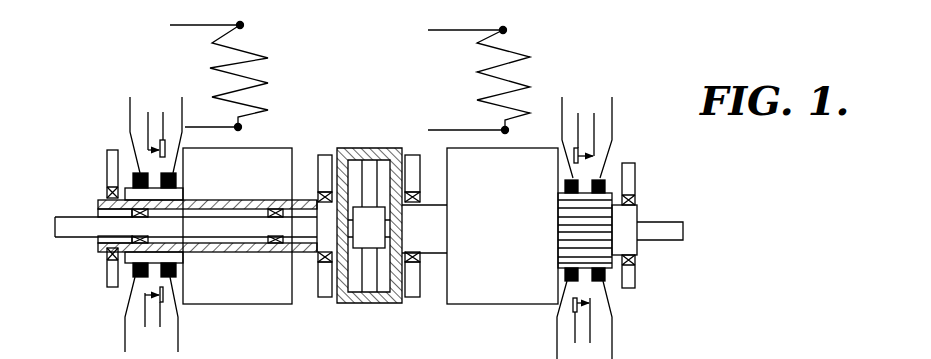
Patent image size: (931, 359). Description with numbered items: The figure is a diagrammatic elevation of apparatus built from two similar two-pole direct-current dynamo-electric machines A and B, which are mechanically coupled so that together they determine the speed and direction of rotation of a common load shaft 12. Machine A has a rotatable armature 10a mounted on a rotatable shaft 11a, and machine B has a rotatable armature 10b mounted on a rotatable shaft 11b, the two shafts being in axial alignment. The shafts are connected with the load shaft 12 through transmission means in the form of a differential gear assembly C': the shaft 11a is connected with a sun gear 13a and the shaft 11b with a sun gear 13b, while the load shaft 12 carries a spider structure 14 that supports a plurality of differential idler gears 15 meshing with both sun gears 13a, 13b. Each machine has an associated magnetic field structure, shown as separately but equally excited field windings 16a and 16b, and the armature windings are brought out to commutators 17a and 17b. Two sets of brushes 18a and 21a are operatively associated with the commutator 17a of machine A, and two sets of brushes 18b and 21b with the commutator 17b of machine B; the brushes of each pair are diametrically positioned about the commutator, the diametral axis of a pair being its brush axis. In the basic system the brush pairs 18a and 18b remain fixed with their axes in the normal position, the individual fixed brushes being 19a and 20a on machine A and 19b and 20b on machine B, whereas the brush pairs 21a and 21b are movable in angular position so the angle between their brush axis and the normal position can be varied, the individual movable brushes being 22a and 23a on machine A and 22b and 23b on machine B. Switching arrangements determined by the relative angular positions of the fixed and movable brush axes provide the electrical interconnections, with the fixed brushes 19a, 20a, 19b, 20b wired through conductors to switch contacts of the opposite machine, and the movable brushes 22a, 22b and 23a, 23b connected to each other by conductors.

The common load shaft 12 is at (62, 222).
The rotatable shaft 11a is at (210, 245).
The rotatable shaft 11b is at (438, 238).
The rotatable armature 10a is at (238, 226).
The rotatable armature 10b is at (502, 226).
The sun gear 13a is at (335, 283).
The sun gear 13b is at (403, 275).
The spider structure 14 is at (370, 165).
The differential idler gears 15 is at (355, 150).
The field winding 16a is at (212, 68).
The field winding 16b is at (523, 55).
The commutator 17a is at (133, 254).
The commutator 17b is at (602, 245).
The brush set 18a is at (178, 168).
The brush set 18b is at (567, 172).
The fixed brush 19a is at (177, 183).
The fixed brush 19b is at (565, 186).
The fixed brush 20a is at (176, 272).
The fixed brush 20b is at (567, 281).
The brush set 21a is at (127, 169).
The brush set 21b is at (615, 168).
The movable brush 22a is at (133, 181).
The movable brush 22b is at (605, 187).
The movable brush 23a is at (135, 276).
The movable brush 23b is at (603, 281).
The dynamo-electric machine A is at (271, 309).
The dynamo-electric machine B is at (499, 309).
The differential gear assembly C' is at (377, 329).